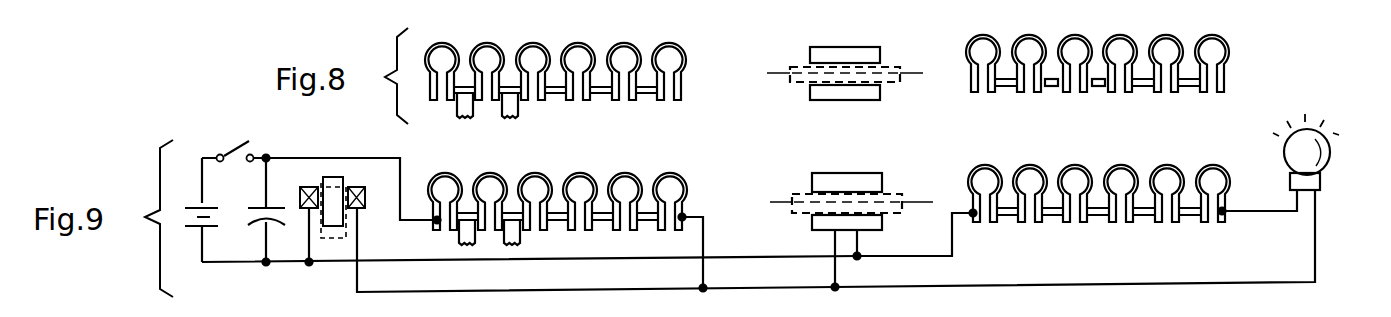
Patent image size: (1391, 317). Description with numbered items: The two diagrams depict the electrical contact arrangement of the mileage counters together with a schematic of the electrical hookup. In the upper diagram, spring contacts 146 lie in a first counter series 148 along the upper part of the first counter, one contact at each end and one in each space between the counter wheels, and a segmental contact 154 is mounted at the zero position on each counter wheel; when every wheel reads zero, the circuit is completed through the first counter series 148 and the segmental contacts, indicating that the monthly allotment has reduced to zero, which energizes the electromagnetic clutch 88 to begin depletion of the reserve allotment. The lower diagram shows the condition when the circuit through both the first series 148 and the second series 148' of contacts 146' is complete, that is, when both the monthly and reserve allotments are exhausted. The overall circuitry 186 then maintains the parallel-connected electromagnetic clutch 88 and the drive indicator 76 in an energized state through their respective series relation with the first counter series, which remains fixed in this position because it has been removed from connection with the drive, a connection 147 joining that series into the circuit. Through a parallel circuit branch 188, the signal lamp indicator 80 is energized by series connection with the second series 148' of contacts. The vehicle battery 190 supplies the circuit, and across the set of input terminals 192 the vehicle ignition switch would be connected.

In FIG. 9, the drive button 76 is at (372, 203).
In FIG. 9, the red light 80 is at (1328, 160).
In FIG. 8, the electromagnetic clutch 88 is at (850, 36).
In FIG. 9, the electromagnetic clutch 88 is at (851, 170).
In FIG. 9, the spring contacts 146 is at (546, 187).
In FIG. 8, the spring contacts of second series 146' is at (1076, 52).
In FIG. 9, the connection 147 is at (434, 223).
In FIG. 8, the first counter series of spring contacts 148 is at (588, 66).
In FIG. 9, the first counter series of spring contacts 148 is at (592, 215).
In FIG. 9, the second series of contacts 148' is at (1112, 175).
In FIG. 8, the segmental contact 154 is at (463, 87).
In FIG. 9, the overall circuitry 186 is at (413, 177).
In FIG. 9, the parallel circuit branch 188 is at (1312, 248).
In FIG. 9, the vehicle battery 190 is at (211, 206).
In FIG. 9, the input terminals 192 is at (229, 144).